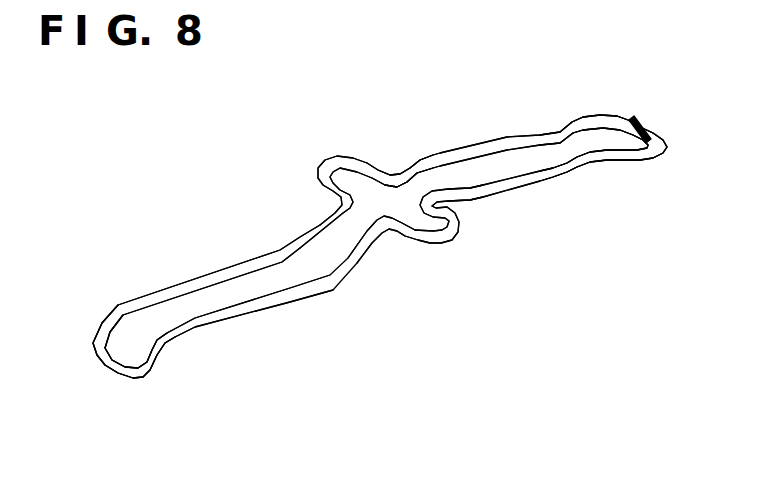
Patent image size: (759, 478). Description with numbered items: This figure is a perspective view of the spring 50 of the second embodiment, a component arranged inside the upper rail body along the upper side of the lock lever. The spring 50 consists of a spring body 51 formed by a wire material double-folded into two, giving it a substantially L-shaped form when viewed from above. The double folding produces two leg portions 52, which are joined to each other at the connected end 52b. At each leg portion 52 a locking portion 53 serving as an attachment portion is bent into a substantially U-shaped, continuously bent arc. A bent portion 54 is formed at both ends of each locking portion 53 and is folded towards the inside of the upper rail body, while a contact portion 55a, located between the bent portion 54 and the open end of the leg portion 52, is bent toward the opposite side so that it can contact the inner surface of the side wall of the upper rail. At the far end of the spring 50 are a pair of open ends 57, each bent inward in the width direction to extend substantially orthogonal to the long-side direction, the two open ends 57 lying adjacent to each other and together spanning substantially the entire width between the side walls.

The spring 50 is at (444, 120).
The spring body 51 is at (207, 273).
The leg portion 52 is at (482, 143).
The connected end 52b is at (117, 366).
The locking portion 53 is at (333, 157).
The bent portion 54 is at (390, 180).
The contact portion 55a is at (421, 158).
The open end 57 is at (613, 121).